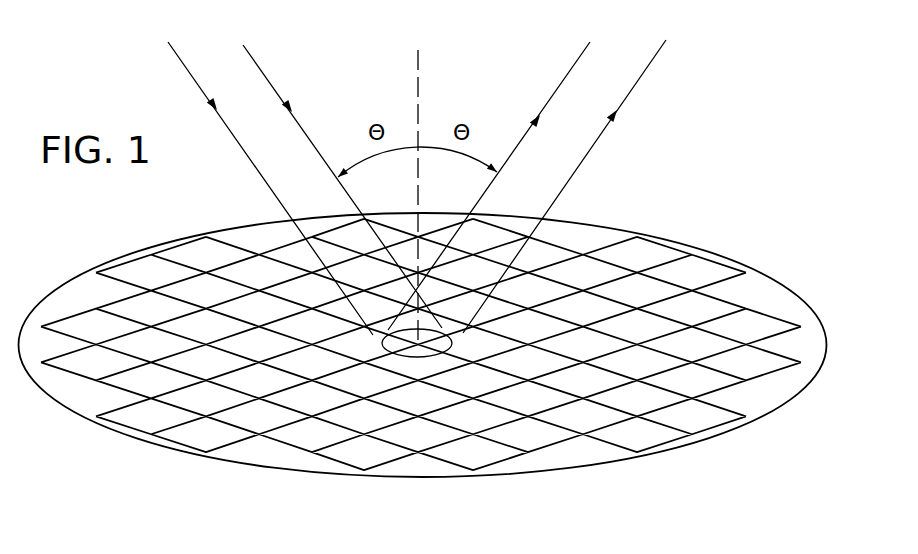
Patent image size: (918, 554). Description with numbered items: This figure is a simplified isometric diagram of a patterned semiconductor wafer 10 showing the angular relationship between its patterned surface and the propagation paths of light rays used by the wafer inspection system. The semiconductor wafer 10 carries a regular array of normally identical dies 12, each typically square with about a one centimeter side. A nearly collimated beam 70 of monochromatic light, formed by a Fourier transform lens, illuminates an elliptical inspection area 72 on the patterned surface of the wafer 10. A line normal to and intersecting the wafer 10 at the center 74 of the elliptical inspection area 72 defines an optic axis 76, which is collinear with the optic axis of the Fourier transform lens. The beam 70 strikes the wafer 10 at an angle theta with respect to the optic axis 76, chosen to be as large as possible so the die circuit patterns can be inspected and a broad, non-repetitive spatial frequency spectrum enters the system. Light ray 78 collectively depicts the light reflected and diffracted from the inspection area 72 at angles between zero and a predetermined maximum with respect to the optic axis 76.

The semiconductor wafer 10 is at (760, 287).
The die 12 is at (600, 275).
The nearly collimated beam 70 is at (187, 70).
The elliptical inspection area 72 is at (392, 357).
The center of elliptical inspection area 74 is at (427, 357).
The optic axis 76 is at (418, 75).
The light ray 78 is at (642, 72).